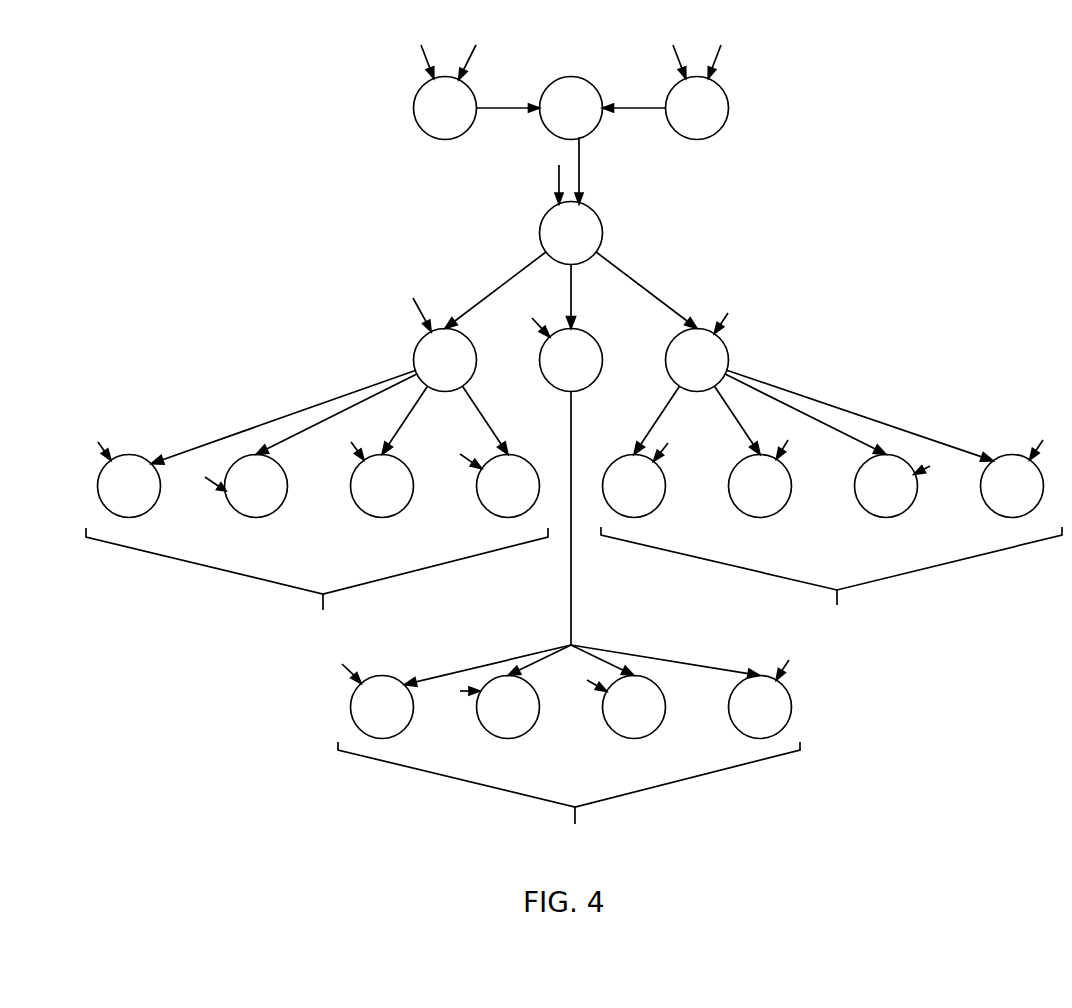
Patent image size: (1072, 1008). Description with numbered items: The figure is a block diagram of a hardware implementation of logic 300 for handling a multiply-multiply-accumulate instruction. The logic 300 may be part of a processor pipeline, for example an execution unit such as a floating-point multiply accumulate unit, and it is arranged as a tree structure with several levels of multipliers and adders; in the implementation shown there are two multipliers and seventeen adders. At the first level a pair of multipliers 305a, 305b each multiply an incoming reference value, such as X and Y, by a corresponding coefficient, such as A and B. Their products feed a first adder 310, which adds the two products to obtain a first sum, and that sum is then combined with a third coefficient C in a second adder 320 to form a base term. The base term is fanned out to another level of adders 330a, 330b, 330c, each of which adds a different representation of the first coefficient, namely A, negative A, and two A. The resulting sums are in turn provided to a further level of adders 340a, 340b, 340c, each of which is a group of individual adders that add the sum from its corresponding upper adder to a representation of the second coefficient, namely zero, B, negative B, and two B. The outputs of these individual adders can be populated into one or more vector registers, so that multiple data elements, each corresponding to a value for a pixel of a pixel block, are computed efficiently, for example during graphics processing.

The logic 300 is at (278, 40).
The multiplier 305a is at (422, 131).
The multiplier 305b is at (725, 123).
The first adder 310 is at (572, 77).
The second adder 320 is at (600, 231).
The adder 330a is at (418, 337).
The adder 330b is at (541, 362).
The adder 330c is at (670, 342).
The adder 340a is at (317, 526).
The adder 340b is at (831, 524).
The adder 340c is at (567, 742).